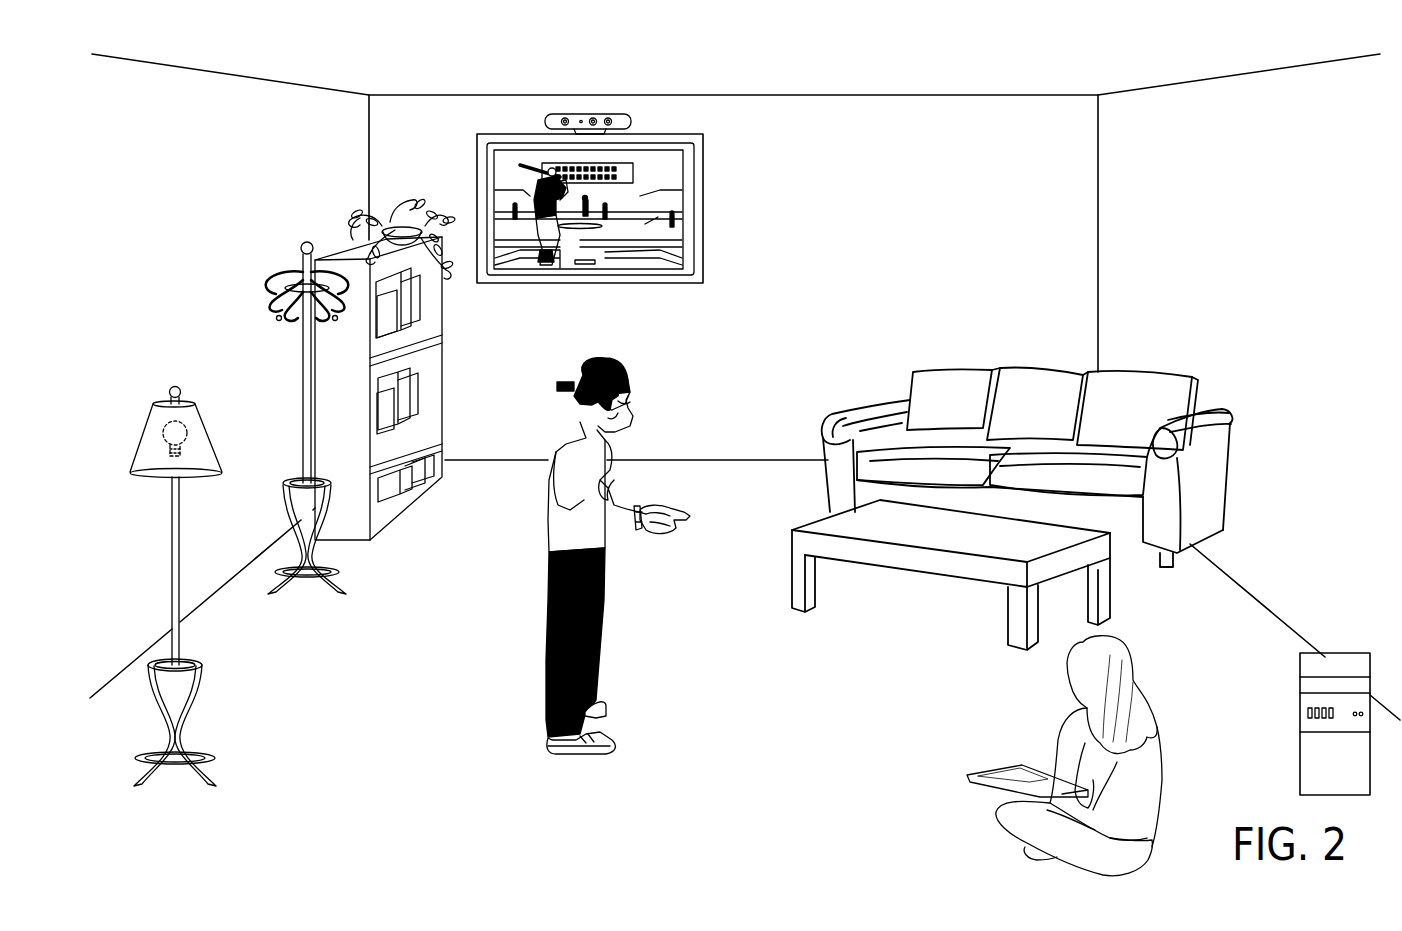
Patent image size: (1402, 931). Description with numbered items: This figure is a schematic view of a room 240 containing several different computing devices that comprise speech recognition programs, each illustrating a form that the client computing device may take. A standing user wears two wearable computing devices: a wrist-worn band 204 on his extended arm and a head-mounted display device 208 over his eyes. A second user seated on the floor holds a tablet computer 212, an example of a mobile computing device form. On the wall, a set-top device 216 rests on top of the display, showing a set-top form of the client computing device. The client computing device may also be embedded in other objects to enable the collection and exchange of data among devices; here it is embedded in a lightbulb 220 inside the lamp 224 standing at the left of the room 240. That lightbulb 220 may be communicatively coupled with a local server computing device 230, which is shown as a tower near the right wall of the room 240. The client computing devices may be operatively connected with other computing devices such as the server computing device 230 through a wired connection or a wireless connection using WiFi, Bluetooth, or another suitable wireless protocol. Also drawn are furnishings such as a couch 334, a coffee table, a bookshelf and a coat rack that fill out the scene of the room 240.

The wrist-worn band 204 is at (639, 508).
The head-mounted display device 208 is at (622, 384).
The tablet computer 212 is at (970, 782).
The set-top device 216 is at (545, 122).
The lightbulb 220 is at (233, 414).
The lamp 224 is at (191, 587).
The server computing device 230 is at (1300, 665).
The room 240 is at (830, 115).
The couch 334 is at (870, 403).